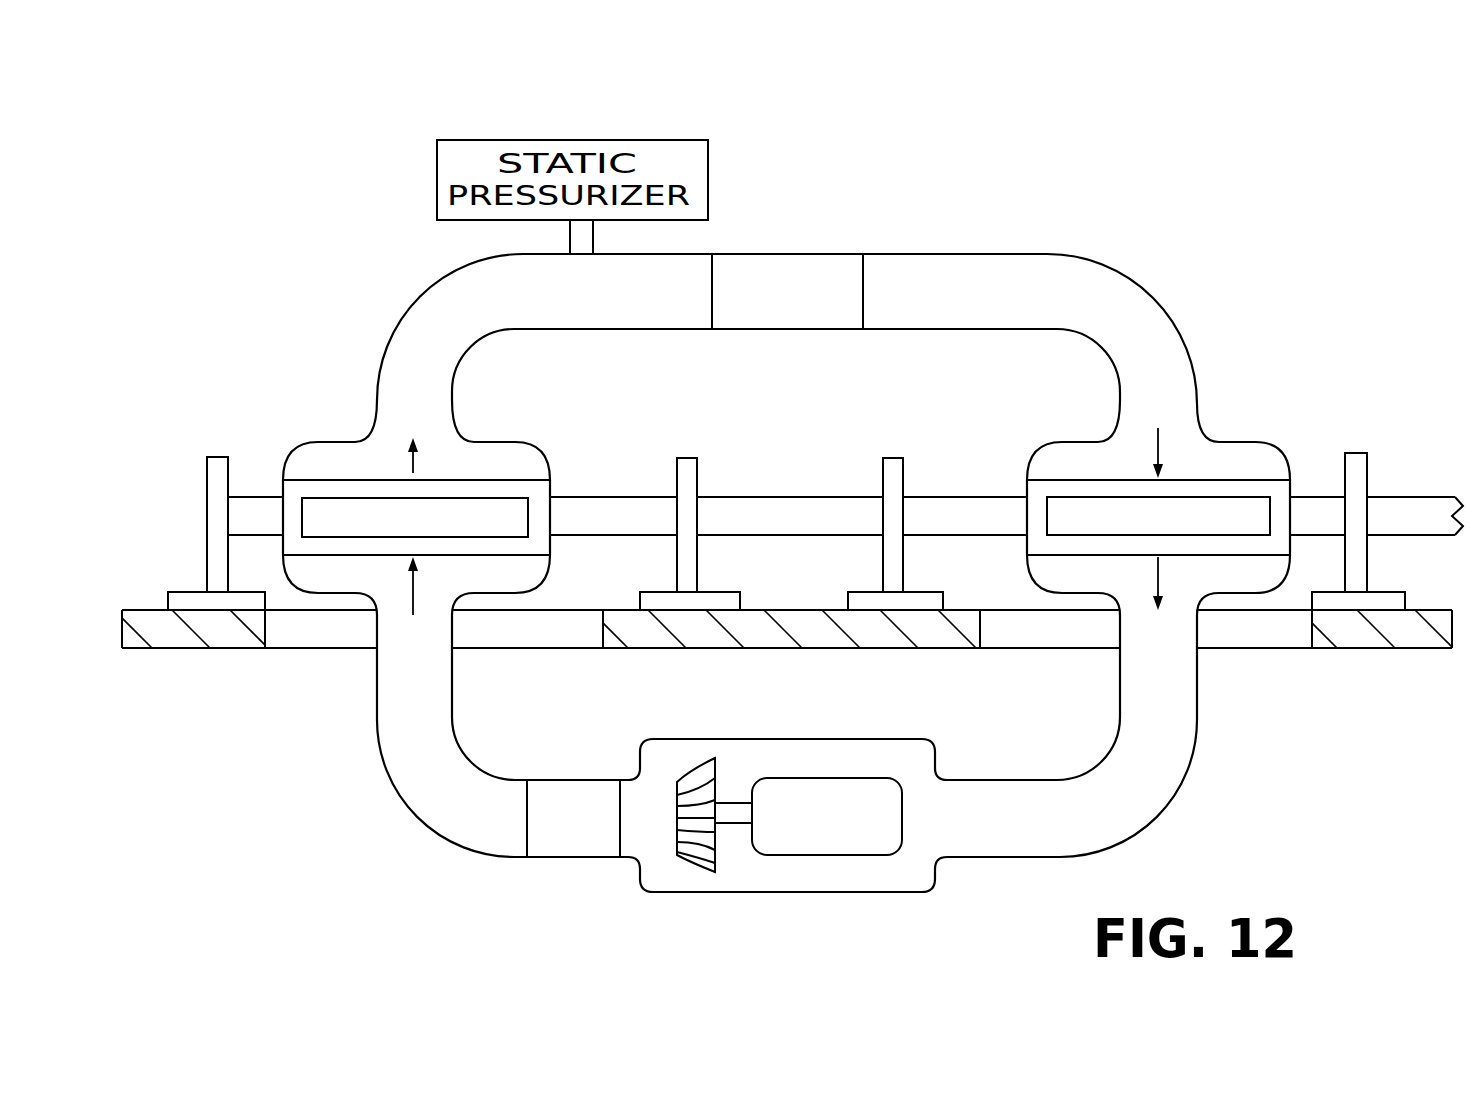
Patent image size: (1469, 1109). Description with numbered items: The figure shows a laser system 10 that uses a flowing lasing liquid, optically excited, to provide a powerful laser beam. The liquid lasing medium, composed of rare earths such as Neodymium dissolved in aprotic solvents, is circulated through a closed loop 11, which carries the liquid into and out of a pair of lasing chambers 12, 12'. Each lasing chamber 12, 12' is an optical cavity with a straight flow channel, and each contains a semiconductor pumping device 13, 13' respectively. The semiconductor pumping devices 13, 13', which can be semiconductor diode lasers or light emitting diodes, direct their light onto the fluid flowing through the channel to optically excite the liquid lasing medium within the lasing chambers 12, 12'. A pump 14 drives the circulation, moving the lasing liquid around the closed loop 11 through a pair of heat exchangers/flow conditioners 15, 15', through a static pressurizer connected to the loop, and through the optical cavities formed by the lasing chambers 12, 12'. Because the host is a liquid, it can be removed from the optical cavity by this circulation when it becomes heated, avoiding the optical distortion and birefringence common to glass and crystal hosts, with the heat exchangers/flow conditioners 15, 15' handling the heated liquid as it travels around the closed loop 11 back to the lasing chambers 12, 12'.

The laser system 10 is at (1195, 244).
The closed loop 11 is at (402, 324).
The lasing chamber 12 is at (409, 594).
The lasing chamber 12' is at (1146, 595).
The semiconductor pumping device 13 is at (442, 465).
The semiconductor pumping device 13' is at (1174, 452).
The pump 14 is at (840, 830).
The heat exchanger/flow conditioner 15 is at (573, 818).
The heat exchanger/flow conditioner 15' is at (787, 291).